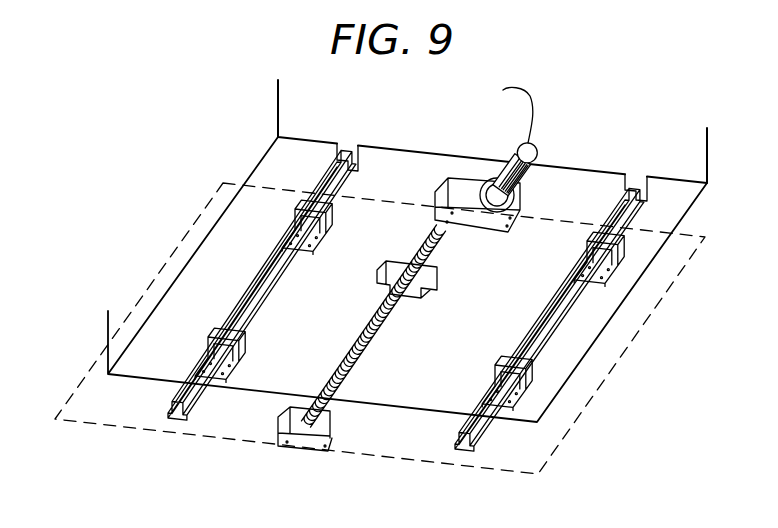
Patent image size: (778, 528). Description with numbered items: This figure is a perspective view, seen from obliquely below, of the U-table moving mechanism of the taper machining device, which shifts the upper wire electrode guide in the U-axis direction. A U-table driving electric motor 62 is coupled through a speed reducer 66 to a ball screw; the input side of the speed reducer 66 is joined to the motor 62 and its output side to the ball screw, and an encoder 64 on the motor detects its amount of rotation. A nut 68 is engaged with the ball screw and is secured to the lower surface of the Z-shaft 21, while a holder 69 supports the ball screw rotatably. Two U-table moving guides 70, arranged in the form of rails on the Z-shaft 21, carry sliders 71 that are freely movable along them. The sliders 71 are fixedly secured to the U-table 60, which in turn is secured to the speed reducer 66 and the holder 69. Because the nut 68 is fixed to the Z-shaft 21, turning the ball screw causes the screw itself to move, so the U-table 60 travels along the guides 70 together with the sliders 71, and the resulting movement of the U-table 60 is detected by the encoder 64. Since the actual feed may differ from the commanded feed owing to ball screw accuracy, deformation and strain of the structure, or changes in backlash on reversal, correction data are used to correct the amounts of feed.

The Z-shaft 21 is at (703, 182).
The U-table 60 is at (643, 329).
The U-table driving electric motor 62 is at (501, 182).
The encoder 64 is at (537, 156).
The speed reducer 66 is at (498, 205).
The nut 68 is at (418, 299).
The holder 69 is at (310, 446).
The U-table moving guides 70 is at (350, 157).
The sliders 71 is at (315, 244).